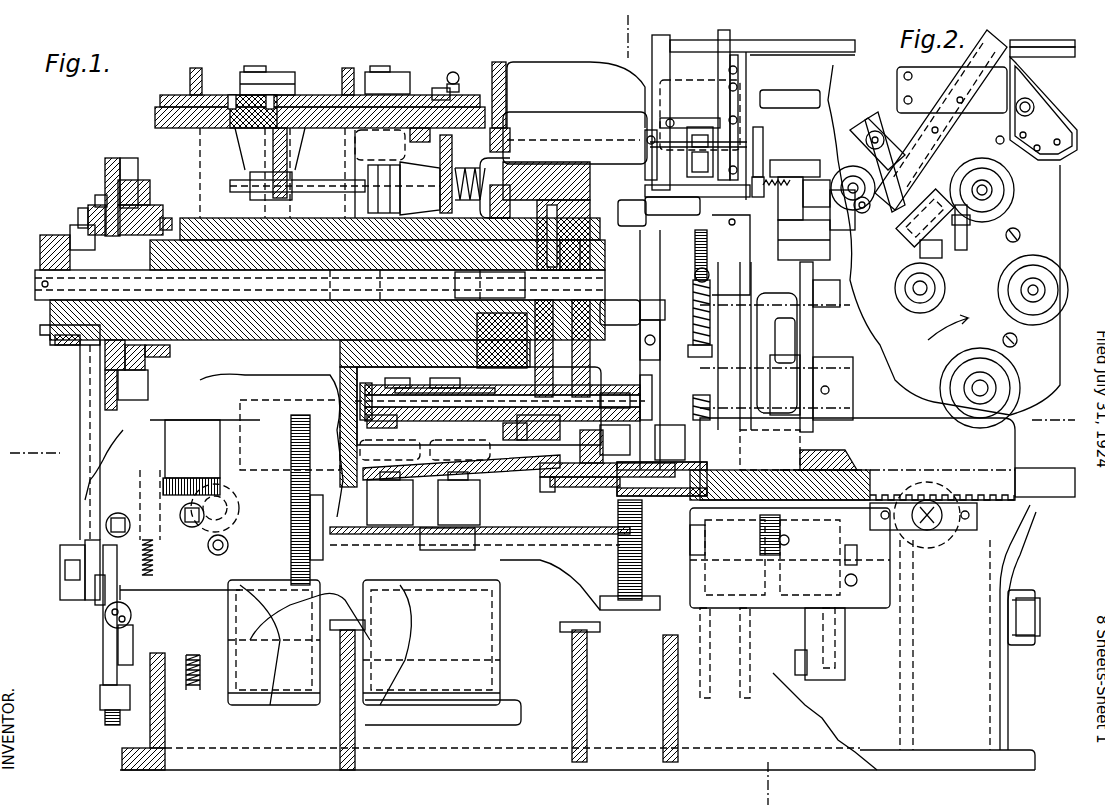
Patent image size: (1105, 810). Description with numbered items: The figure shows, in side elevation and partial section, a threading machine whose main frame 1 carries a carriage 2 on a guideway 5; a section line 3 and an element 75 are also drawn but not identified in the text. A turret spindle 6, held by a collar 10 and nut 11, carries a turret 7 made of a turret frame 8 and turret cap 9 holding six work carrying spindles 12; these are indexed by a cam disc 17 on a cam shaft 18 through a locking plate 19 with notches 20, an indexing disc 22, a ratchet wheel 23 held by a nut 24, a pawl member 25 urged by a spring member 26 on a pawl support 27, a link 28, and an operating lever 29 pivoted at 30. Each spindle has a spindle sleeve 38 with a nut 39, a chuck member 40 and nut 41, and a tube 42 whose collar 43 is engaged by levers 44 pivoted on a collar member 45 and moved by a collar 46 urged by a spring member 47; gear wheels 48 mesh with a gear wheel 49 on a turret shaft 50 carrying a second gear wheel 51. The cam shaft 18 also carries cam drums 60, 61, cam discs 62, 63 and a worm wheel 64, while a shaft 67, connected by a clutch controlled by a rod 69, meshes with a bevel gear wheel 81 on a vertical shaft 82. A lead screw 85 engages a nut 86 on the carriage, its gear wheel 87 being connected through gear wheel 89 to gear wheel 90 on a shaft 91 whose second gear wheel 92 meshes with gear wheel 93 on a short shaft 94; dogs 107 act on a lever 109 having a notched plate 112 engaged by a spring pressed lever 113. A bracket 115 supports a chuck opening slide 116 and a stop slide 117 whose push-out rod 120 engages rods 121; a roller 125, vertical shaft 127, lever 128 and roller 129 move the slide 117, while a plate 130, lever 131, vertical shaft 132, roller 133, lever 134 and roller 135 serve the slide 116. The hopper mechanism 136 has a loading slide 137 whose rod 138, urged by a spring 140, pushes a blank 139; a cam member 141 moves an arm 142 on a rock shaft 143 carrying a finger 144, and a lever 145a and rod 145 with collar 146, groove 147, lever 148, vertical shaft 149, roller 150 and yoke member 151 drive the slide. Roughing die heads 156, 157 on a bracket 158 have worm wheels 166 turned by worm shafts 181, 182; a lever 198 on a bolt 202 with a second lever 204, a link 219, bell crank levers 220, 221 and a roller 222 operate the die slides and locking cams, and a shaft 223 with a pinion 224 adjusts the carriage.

In FIG. 1, the main frame 1 is at (1003, 675).
In FIG. 1, the carriage 2 is at (1015, 445).
In FIG. 1, the section line 3 is at (33, 447).
In FIG. 1, the guideway 5 is at (1045, 478).
In FIG. 1, the turret spindle 6 is at (198, 228).
In FIG. 1, the work carrying turret 7 is at (562, 133).
In FIG. 1, the turret frame 8 is at (634, 31).
In FIG. 1, the turret cap 9 is at (575, 140).
In FIG. 1, the collar 10 is at (488, 200).
In FIG. 1, the nut 11 is at (165, 215).
In FIG. 1, the work carrying spindle 12 is at (612, 360).
In FIG. 2, the work carrying spindle 12 is at (1018, 240).
In FIG. 1, the cam disc 17 is at (103, 675).
In FIG. 1, the cam shaft 18 is at (550, 632).
In FIG. 1, the locking plate 19 is at (140, 185).
In FIG. 1, the notches 20 is at (133, 165).
In FIG. 1, the indexing disc 22 is at (112, 160).
In FIG. 1, the ratchet wheel 23 is at (60, 344).
In FIG. 1, the nut 24 is at (72, 230).
In FIG. 1, the pawl member 25 is at (92, 210).
In FIG. 1, the spring member 26 is at (100, 196).
In FIG. 1, the pawl support 27 is at (80, 212).
In FIG. 1, the link 28 is at (80, 380).
In FIG. 1, the operating lever 29 is at (62, 565).
In FIG. 1, the pivot 30 is at (58, 548).
In FIG. 1, the spindle sleeve 38 is at (552, 348).
In FIG. 1, the nut 39 is at (571, 348).
In FIG. 1, the chuck member 40 is at (638, 381).
In FIG. 1, the nut 41 is at (618, 393).
In FIG. 1, the tube 42 is at (502, 372).
In FIG. 1, the collar 43 is at (410, 385).
In FIG. 1, the levers 44 is at (396, 373).
In FIG. 1, the collar member 45 is at (367, 389).
In FIG. 1, the collar 46 is at (438, 383).
In FIG. 1, the spring member 47 is at (498, 342).
In FIG. 1, the gear wheel 48 is at (519, 451).
In FIG. 1, the gear wheel 49 is at (548, 208).
In FIG. 1, the turret shaft 50 is at (566, 253).
In FIG. 1, the second gear wheel 51 is at (42, 248).
In FIG. 1, the cam drum 60 is at (300, 700).
In FIG. 1, the cam drum 61 is at (438, 710).
In FIG. 1, the cam disc 62 is at (720, 660).
In FIG. 1, the cam disc 63 is at (845, 670).
In FIG. 1, the worm wheel 64 is at (190, 692).
In FIG. 1, the shaft 67 is at (183, 512).
In FIG. 1, the rod 69 is at (228, 550).
In FIG. 1, the block 75 is at (205, 449).
In FIG. 1, the bevel gear wheel 81 is at (165, 492).
In FIG. 1, the vertical shaft 82 is at (178, 478).
In FIG. 1, the lead screw 85 is at (920, 470).
In FIG. 1, the nut 86 is at (855, 460).
In FIG. 1, the gear wheel 87 is at (662, 479).
In FIG. 1, the gear wheel 89 is at (660, 635).
In FIG. 1, the gear wheel 90 is at (618, 600).
In FIG. 1, the shaft 91 is at (540, 592).
In FIG. 1, the second gear wheel 92 is at (310, 616).
In FIG. 1, the gear wheel 93 is at (296, 415).
In FIG. 1, the short shaft 94 is at (320, 523).
In FIG. 1, the dogs 107 is at (128, 712).
In FIG. 1, the lever 109 is at (98, 605).
In FIG. 1, the notched plate 112 is at (108, 622).
In FIG. 1, the spring pressed lever 113 is at (118, 640).
In FIG. 1, the bracket 115 is at (196, 68).
In FIG. 1, the chuck opening slide 116 is at (345, 130).
In FIG. 1, the stop slide 117 is at (160, 112).
In FIG. 1, the push-out rod 120 is at (298, 182).
In FIG. 1, the rod 121 is at (342, 405).
In FIG. 1, the roller 125 is at (225, 495).
In FIG. 1, the vertical shaft 127 is at (320, 285).
In FIG. 1, the lever 128 is at (268, 74).
In FIG. 1, the roller 129 is at (245, 98).
In FIG. 1, the plate 130 is at (452, 150).
In FIG. 1, the lever 131 is at (425, 482).
In FIG. 1, the vertical shaft 132 is at (353, 285).
In FIG. 1, the roller 133 is at (430, 550).
In FIG. 1, the second lever 134 is at (400, 72).
In FIG. 1, the roller 135 is at (358, 58).
In FIG. 1, the hopper mechanism 136 is at (780, 77).
In FIG. 2, the hopper mechanism 136 is at (965, 63).
In FIG. 1, the loading slide 137 is at (830, 230).
In FIG. 2, the loading slide 137 is at (850, 212).
In FIG. 1, the rod 138 is at (793, 190).
In FIG. 1, the blank 139 is at (640, 212).
In FIG. 1, the spring 140 is at (757, 180).
In FIG. 1, the cam member 141 is at (855, 225).
In FIG. 2, the cam member 141 is at (885, 228).
In FIG. 1, the arm 142 is at (766, 150).
In FIG. 2, the arm 142 is at (870, 240).
In FIG. 1, the rock shaft 143 is at (742, 128).
In FIG. 2, the rock shaft 143 is at (880, 125).
In FIG. 1, the finger 144 is at (700, 186).
In FIG. 2, the finger 144 is at (850, 150).
In FIG. 1, the rod 145 is at (745, 100).
In FIG. 2, the rod 145 is at (1028, 93).
In FIG. 1, the lever 145a is at (660, 125).
In FIG. 2, the lever 145a is at (967, 225).
In FIG. 1, the collar 146 is at (440, 88).
In FIG. 1, the groove 147 is at (481, 90).
In FIG. 1, the lever 148 is at (548, 492).
In FIG. 1, the vertical shaft 149 is at (465, 285).
In FIG. 1, the roller 150 is at (480, 538).
In FIG. 1, the yoke member 151 is at (455, 73).
In FIG. 1, the roughing die head 156 is at (648, 340).
In FIG. 1, the roughing die head 157 is at (715, 330).
In FIG. 1, the bracket 158 is at (800, 355).
In FIG. 1, the worm wheel 166 is at (722, 255).
In FIG. 1, the worm shaft 181 is at (680, 432).
In FIG. 1, the worm shaft 182 is at (720, 335).
In FIG. 1, the lever 198 is at (785, 542).
In FIG. 1, the bolt 202 is at (692, 535).
In FIG. 1, the second lever 204 is at (790, 562).
In FIG. 1, the link 219 is at (795, 327).
In FIG. 1, the bell crank lever 220 is at (835, 360).
In FIG. 1, the second bell crank lever 221 is at (861, 565).
In FIG. 1, the roller 222 is at (808, 650).
In FIG. 1, the shaft 223 is at (942, 517).
In FIG. 1, the pinion 224 is at (938, 545).